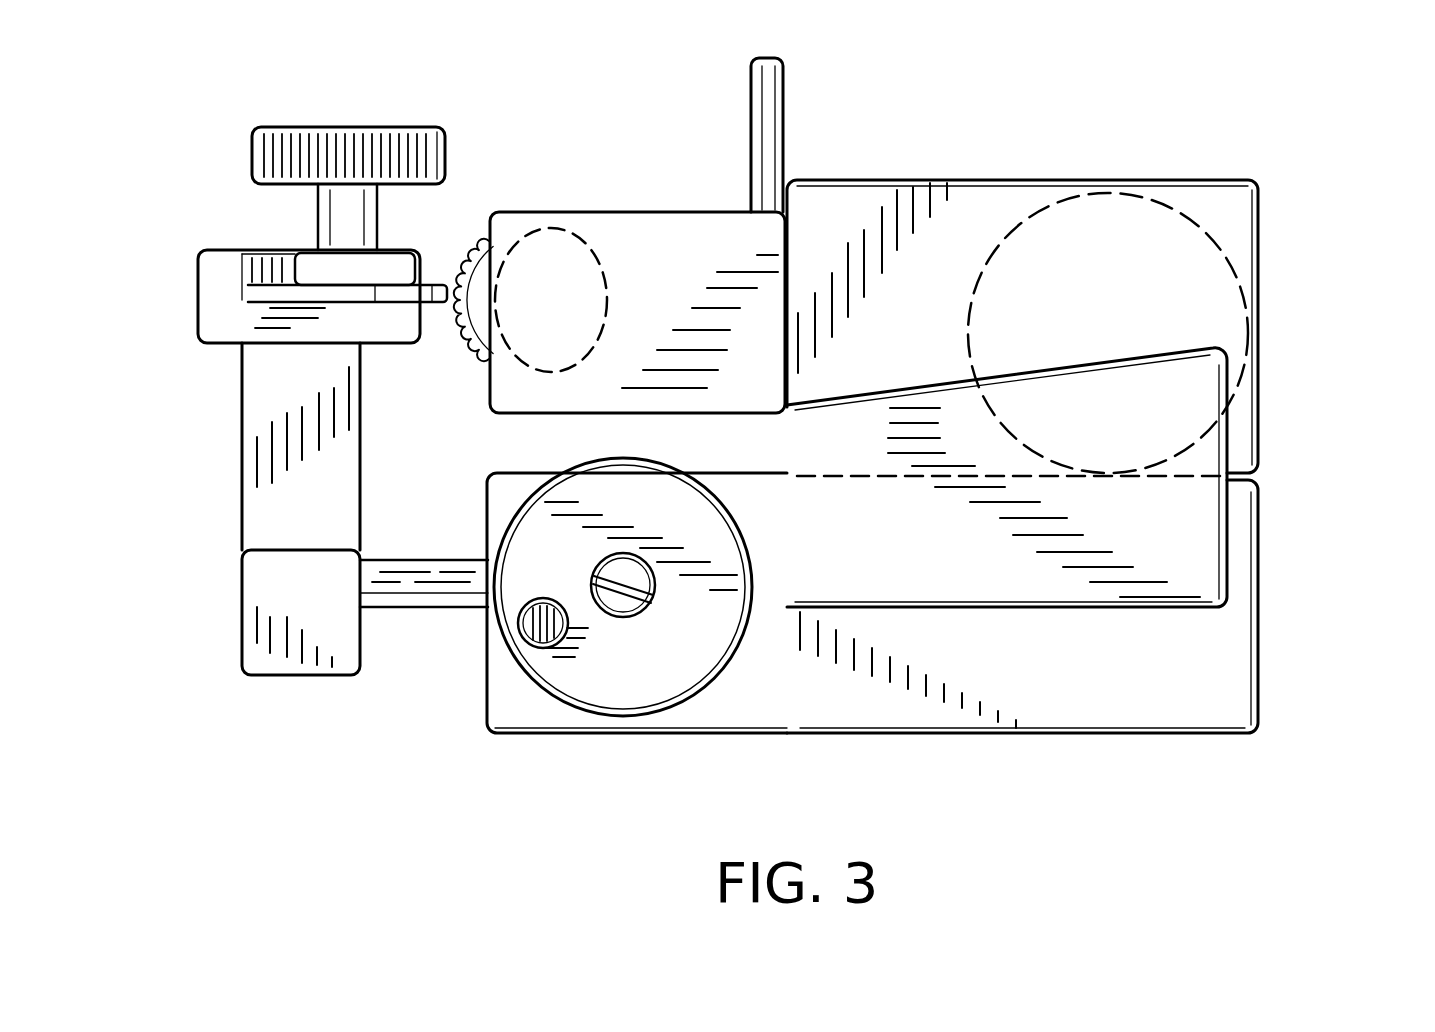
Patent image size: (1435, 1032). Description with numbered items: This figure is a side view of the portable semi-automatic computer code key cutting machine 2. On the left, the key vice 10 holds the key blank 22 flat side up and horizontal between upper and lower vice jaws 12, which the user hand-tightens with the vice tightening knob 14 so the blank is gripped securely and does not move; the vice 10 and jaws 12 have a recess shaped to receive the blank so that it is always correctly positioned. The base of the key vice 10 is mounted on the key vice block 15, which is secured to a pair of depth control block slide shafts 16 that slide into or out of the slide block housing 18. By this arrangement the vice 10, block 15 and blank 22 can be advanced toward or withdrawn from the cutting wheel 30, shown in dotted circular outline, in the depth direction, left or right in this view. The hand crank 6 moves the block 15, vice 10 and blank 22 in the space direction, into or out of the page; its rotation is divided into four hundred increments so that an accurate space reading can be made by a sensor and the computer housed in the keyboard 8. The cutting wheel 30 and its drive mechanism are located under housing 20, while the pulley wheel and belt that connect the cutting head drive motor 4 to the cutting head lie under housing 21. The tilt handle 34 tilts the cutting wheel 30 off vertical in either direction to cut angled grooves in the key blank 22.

The portable semi-automatic computer code key cutting machine 2 is at (1298, 266).
The cutting head drive motor 4 is at (1206, 229).
The hand crank 6 is at (701, 692).
The keyboard 8 is at (1194, 547).
The key vice 10 is at (197, 251).
The vice jaws 12 is at (421, 251).
The vice tightening knob 14 is at (352, 124).
The key vice block 15 is at (236, 467).
The depth control block slide shafts 16 is at (439, 559).
The slide block housing 18 is at (486, 681).
The housing 20 is at (524, 414).
The housing 21 is at (941, 178).
The key blank 22 is at (447, 304).
The cutting wheel 30 is at (595, 254).
The tilt handle 34 is at (783, 88).